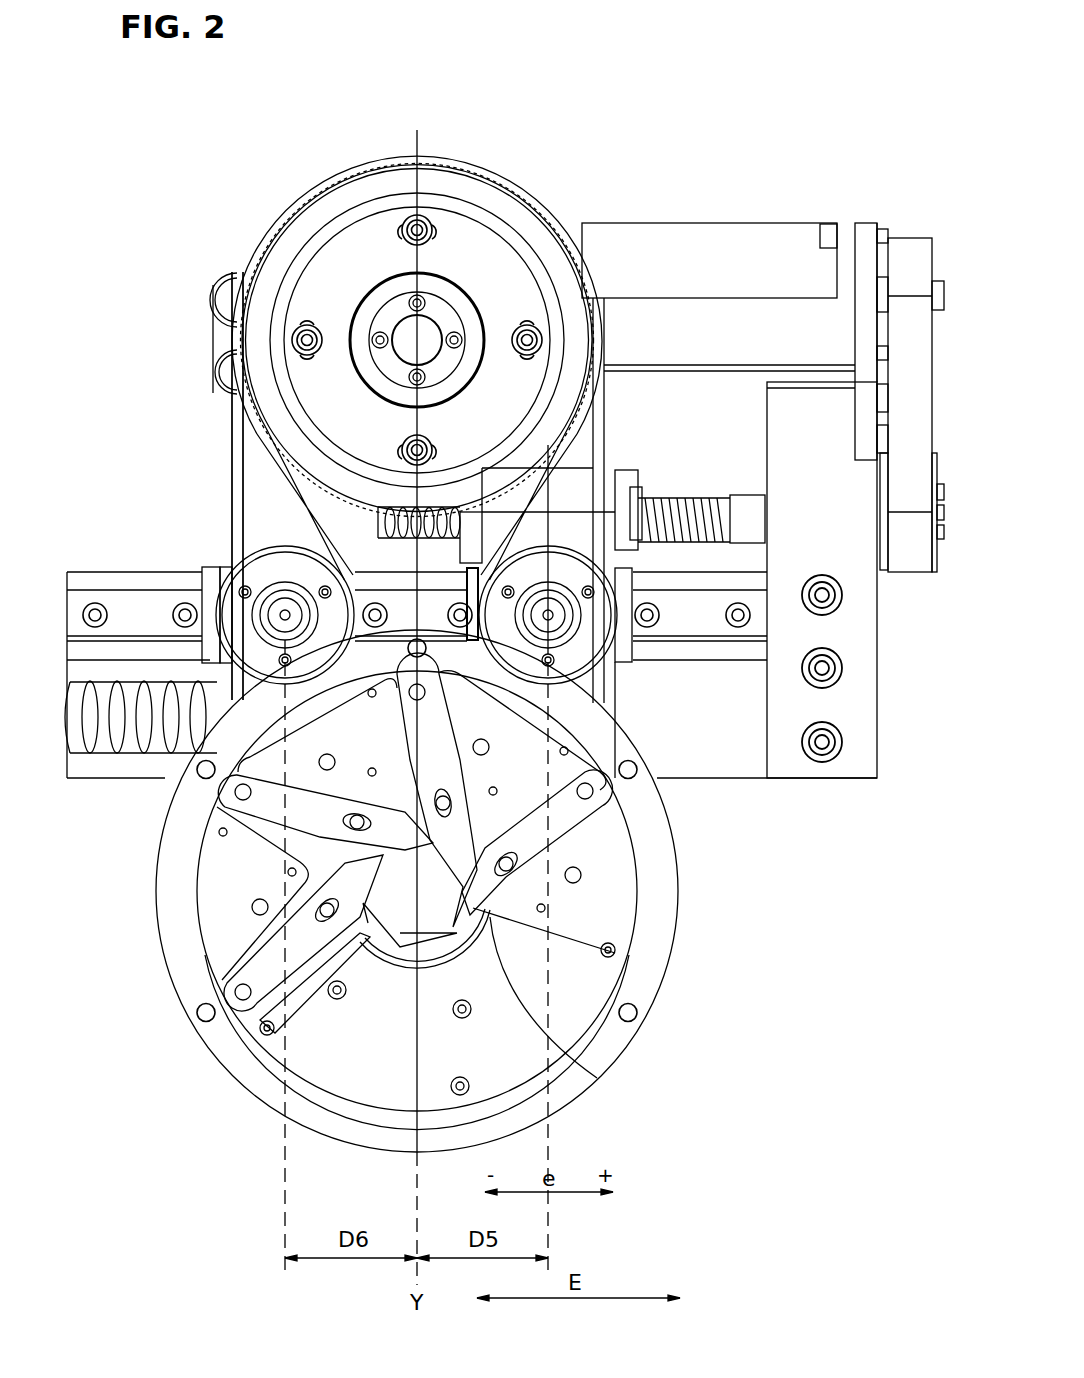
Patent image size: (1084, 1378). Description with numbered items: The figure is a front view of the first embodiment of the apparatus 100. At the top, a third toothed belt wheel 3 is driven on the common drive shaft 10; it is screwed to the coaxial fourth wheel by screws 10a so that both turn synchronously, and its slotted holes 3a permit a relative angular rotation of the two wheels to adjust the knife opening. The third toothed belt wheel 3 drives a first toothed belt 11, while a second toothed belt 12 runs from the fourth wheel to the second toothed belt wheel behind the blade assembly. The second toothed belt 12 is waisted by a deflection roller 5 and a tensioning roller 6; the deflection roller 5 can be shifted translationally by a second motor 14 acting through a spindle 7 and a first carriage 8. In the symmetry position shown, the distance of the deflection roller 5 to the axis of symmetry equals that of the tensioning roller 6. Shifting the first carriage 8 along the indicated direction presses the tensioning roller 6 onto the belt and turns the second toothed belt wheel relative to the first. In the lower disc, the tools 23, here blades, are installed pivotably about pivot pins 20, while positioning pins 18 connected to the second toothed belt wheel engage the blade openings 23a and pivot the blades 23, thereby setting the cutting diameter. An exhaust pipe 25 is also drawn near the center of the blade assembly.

The apparatus 100 is at (493, 97).
The drive shaft 10 is at (405, 322).
The third toothed belt wheel 3 is at (487, 243).
The slotted holes 3a is at (590, 275).
The screws 10a is at (545, 338).
The second motor 14 is at (805, 247).
The first toothed belt 11 is at (235, 437).
The second toothed belt 12 is at (278, 478).
The first carriage 8 is at (578, 480).
The spindle 7 is at (685, 538).
The tensioning roller 6 is at (250, 638).
The deflection roller 5 is at (573, 648).
The pivot pins 20 is at (243, 995).
The tools 23 is at (573, 823).
The blade openings 23a is at (480, 905).
The positioning pins 18 is at (520, 900).
The exhaust pipe 25 is at (435, 908).